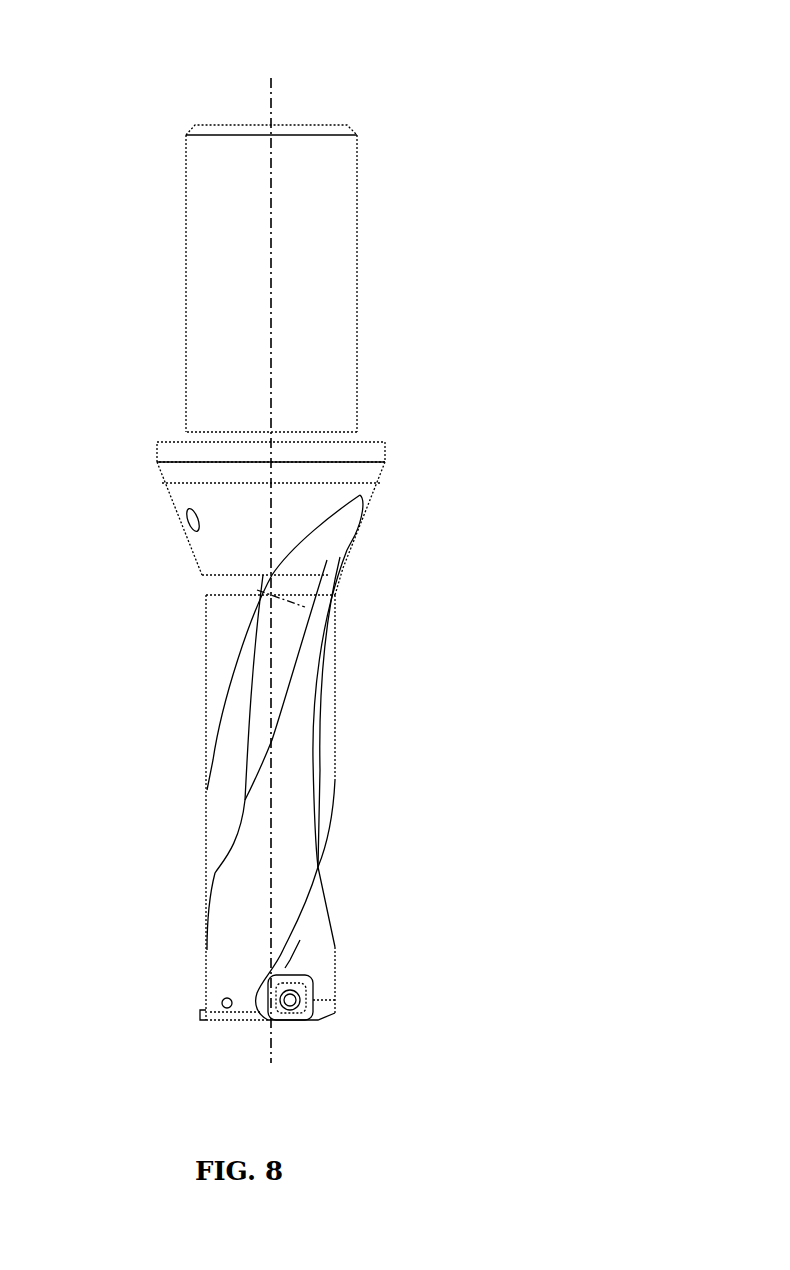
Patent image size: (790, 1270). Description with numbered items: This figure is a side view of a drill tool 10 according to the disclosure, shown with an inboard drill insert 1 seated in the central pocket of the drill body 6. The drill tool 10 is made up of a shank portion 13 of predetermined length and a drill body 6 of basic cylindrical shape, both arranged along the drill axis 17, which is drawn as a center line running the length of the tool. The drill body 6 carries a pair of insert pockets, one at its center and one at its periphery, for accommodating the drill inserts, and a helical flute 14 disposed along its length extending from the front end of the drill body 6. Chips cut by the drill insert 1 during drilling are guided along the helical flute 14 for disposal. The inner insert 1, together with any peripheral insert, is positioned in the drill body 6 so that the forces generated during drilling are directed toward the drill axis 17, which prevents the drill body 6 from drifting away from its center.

The drill tool 10 is at (272, 536).
The shank portion 13 is at (359, 302).
The drill axis 17 is at (270, 367).
The helical flute 14 is at (221, 761).
The drill body 6 is at (309, 755).
The drill insert 1 is at (311, 977).